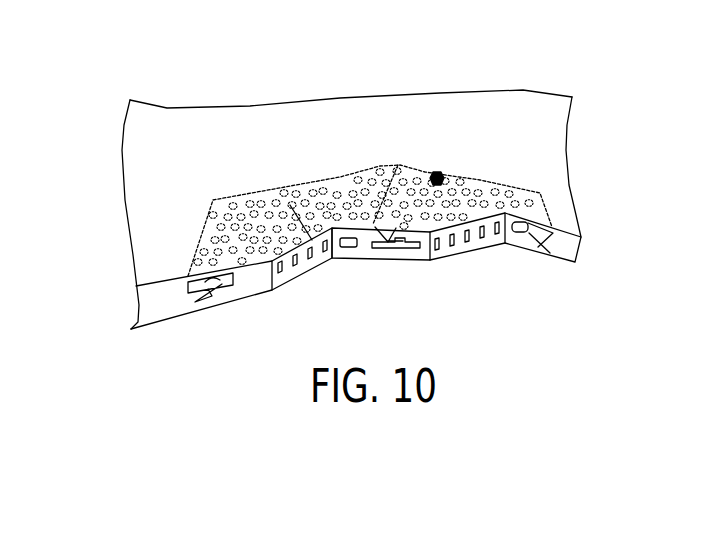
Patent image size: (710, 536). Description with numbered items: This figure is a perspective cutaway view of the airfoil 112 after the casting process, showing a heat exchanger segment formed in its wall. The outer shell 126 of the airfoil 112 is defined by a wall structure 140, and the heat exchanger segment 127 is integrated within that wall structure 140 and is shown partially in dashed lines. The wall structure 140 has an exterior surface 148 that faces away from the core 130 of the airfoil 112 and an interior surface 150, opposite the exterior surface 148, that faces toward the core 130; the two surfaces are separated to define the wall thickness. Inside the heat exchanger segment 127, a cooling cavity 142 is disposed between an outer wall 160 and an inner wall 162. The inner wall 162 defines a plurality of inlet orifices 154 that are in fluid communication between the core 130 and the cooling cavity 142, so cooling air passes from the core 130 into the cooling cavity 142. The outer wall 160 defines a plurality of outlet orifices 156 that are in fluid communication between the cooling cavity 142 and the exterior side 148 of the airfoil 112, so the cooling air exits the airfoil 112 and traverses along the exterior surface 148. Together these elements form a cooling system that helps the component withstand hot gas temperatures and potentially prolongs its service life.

The airfoil 112 is at (167, 116).
The outer shell 126 is at (543, 105).
The heat exchanger segment 127 is at (438, 172).
The core 130 is at (480, 283).
The wall structure 140 is at (572, 245).
The cooling cavity 142 is at (398, 249).
The exterior surface 148 is at (187, 173).
The interior surface 150 is at (158, 318).
The inlet orifices 154 is at (207, 300).
The outlet orifices 156 is at (387, 188).
The outer wall 160 is at (290, 205).
The inner wall 162 is at (293, 277).